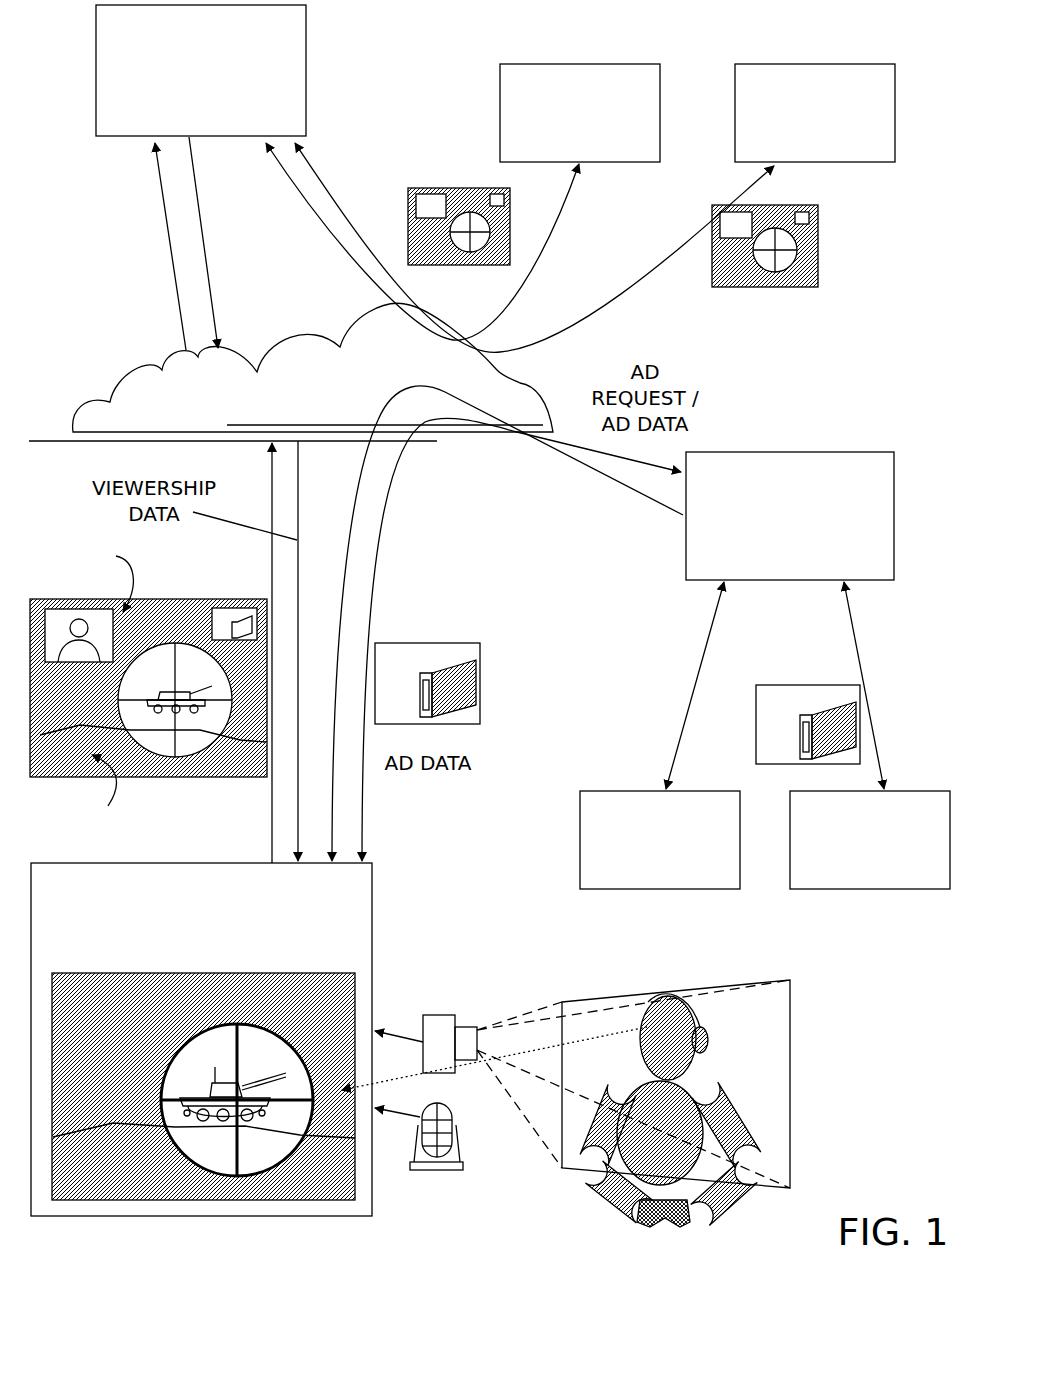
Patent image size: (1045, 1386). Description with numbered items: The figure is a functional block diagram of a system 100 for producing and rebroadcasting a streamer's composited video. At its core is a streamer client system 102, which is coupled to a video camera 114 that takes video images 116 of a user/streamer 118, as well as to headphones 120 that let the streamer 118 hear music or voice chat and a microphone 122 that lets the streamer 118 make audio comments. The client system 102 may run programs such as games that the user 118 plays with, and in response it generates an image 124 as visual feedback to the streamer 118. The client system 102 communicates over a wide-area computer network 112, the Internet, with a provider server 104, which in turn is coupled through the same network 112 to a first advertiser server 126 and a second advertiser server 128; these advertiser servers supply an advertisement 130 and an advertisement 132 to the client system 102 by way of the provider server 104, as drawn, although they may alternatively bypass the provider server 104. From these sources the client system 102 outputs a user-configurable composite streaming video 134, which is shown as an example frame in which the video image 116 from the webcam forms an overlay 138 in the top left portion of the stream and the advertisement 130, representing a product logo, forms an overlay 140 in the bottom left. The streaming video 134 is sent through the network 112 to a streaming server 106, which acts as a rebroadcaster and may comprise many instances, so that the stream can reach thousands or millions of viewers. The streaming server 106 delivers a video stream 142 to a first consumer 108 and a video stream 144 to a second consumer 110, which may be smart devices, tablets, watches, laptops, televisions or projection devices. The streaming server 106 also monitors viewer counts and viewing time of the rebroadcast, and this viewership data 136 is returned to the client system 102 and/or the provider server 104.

The system 100 is at (893, 333).
The streamer client system 102 is at (201, 1039).
The provider server 104 is at (790, 516).
The streaming server 106 is at (201, 70).
The consumer 108 is at (580, 113).
The consumer 110 is at (815, 113).
The wide-area computer network 112 is at (291, 372).
The video camera 114 is at (426, 1027).
The video images 116 is at (681, 1110).
The user/streamer 118 is at (663, 1185).
The headphones 120 is at (701, 1023).
The microphone 122 is at (419, 1152).
The image 124 is at (203, 1071).
The advertiser server 126 is at (660, 840).
The advertiser server 128 is at (870, 840).
The advertisement 130 is at (531, 638).
The advertisement 132 is at (617, 689).
The streaming video 134 is at (147, 460).
The viewership data 136 is at (265, 242).
The overlay 138 is at (103, 579).
The overlay 140 is at (95, 789).
The video stream 142 is at (459, 212).
The video stream 144 is at (765, 235).